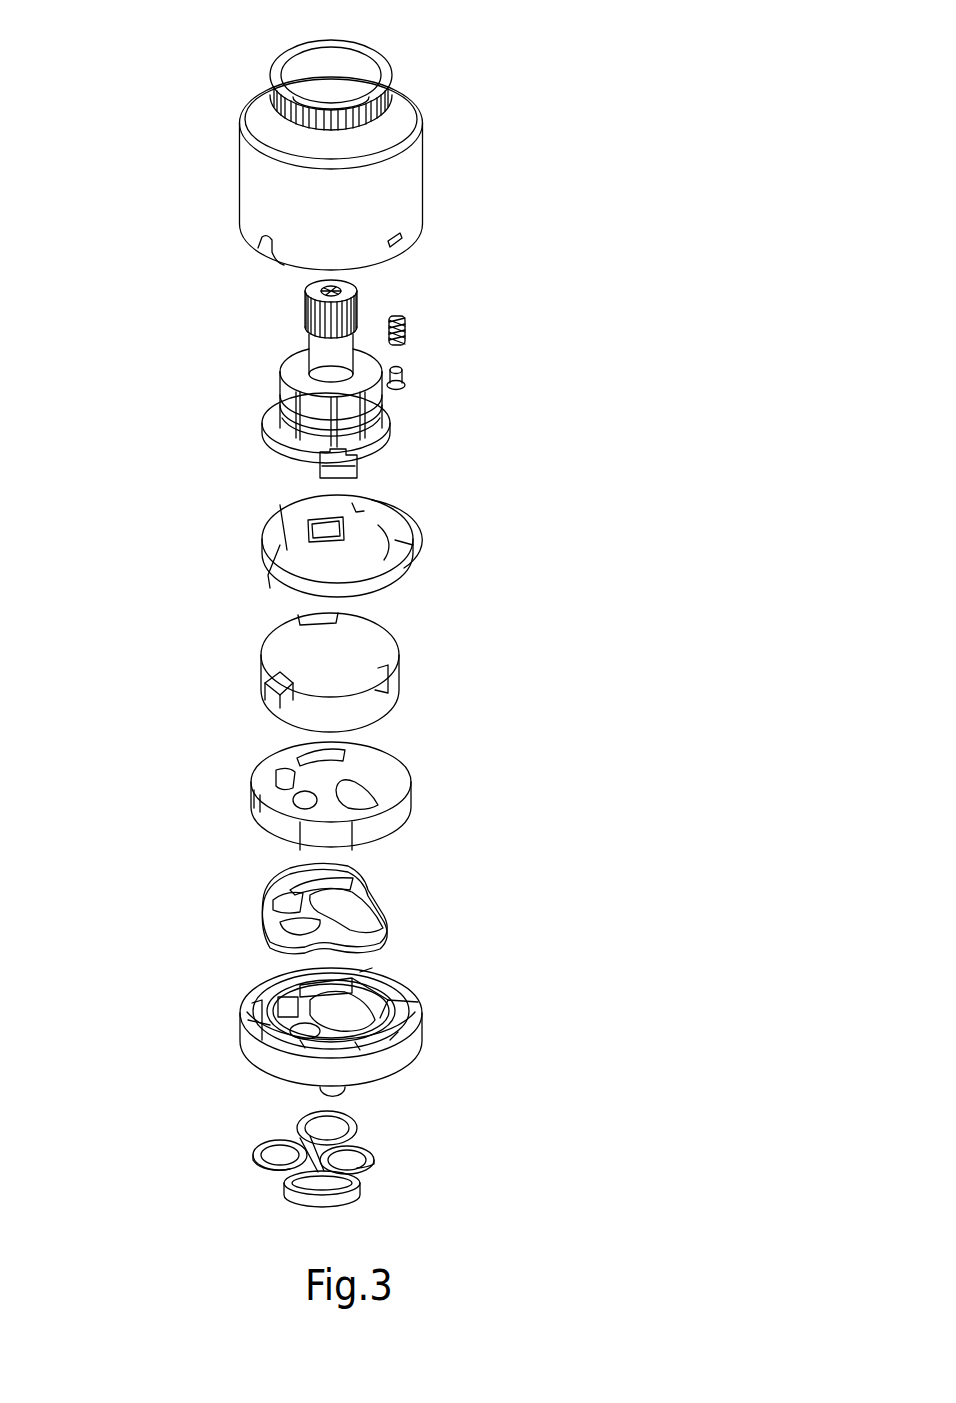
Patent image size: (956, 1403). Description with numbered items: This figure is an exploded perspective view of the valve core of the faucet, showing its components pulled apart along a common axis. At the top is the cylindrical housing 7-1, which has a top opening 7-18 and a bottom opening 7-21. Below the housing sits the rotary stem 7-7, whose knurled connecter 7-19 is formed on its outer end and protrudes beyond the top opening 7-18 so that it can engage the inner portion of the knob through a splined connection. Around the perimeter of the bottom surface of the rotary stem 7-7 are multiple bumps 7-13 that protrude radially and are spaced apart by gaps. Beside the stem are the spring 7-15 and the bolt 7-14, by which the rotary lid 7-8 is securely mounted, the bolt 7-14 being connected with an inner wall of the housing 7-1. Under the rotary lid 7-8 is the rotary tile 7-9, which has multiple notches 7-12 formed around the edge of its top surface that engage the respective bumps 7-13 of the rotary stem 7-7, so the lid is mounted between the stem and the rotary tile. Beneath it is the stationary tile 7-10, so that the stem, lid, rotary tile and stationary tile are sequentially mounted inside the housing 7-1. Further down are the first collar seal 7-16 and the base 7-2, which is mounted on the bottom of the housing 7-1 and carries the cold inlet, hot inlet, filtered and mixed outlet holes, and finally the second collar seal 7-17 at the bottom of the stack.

The housing 1 is at (447, 145).
The top opening 18 is at (340, 92).
The bottom opening 21 is at (398, 250).
The connecter 19 is at (307, 303).
The rotary stem 7 is at (216, 306).
The bumps 13 is at (302, 459).
The spring 15 is at (420, 322).
The bolt 14 is at (414, 386).
The rotary lid 8 is at (371, 551).
The rotary tile 9 is at (332, 678).
The notches 12 is at (257, 692).
The stationary tile 10 is at (394, 781).
The first collar seal 16 is at (399, 930).
The base 2 is at (356, 1021).
The second collar seal 17 is at (386, 1185).